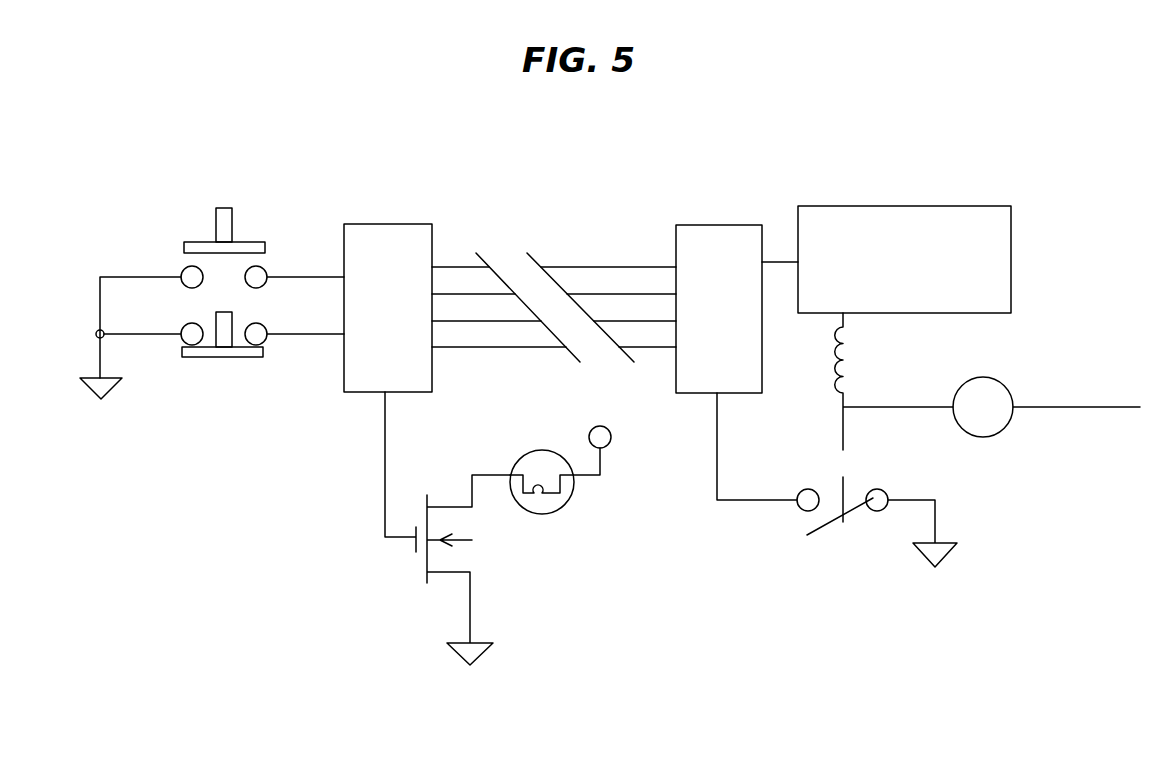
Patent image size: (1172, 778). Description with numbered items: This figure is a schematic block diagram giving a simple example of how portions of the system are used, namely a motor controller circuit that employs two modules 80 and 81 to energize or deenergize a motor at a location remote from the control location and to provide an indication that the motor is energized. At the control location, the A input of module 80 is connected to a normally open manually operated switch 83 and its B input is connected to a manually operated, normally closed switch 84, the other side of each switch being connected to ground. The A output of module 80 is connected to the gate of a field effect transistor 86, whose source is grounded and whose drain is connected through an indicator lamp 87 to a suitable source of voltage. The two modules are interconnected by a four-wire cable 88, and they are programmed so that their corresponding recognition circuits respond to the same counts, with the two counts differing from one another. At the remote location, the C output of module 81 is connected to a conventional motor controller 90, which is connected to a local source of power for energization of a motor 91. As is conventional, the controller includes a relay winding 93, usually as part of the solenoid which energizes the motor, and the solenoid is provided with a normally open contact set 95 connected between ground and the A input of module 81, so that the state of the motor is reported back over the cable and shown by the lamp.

The module 80 is at (391, 224).
The module 81 is at (723, 225).
The normally open manually operated switch 83 is at (228, 208).
The normally closed manually operated switch 84 is at (222, 357).
The field effect transistor 86 is at (425, 558).
The indicator lamp 87 is at (562, 503).
The four-wire cable 88 is at (476, 253).
The motor controller 90 is at (910, 206).
The motor 91 is at (1062, 407).
The relay winding 93 is at (845, 362).
The normally open contact set 95 is at (833, 520).